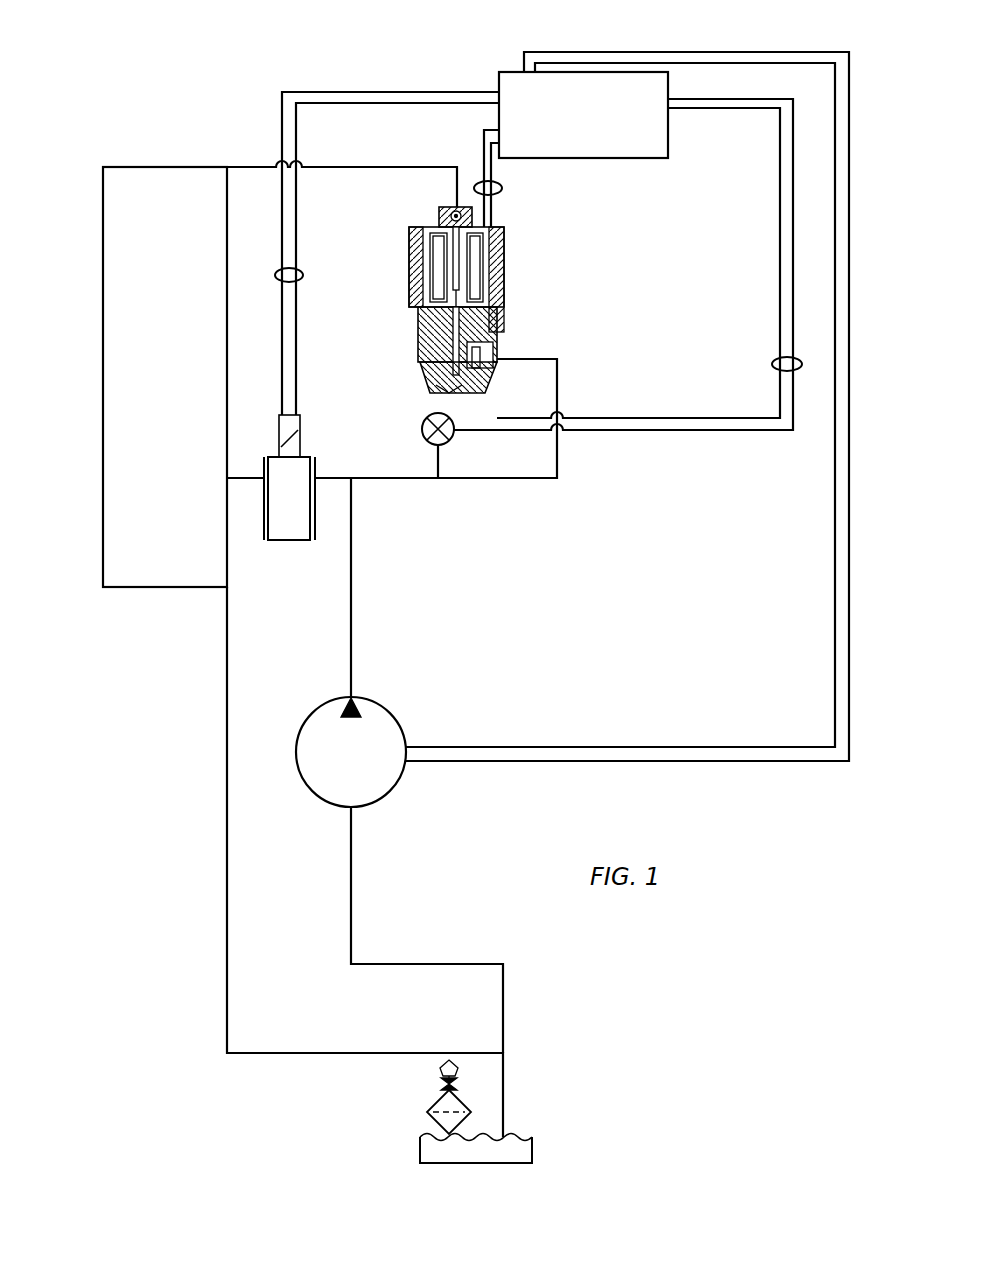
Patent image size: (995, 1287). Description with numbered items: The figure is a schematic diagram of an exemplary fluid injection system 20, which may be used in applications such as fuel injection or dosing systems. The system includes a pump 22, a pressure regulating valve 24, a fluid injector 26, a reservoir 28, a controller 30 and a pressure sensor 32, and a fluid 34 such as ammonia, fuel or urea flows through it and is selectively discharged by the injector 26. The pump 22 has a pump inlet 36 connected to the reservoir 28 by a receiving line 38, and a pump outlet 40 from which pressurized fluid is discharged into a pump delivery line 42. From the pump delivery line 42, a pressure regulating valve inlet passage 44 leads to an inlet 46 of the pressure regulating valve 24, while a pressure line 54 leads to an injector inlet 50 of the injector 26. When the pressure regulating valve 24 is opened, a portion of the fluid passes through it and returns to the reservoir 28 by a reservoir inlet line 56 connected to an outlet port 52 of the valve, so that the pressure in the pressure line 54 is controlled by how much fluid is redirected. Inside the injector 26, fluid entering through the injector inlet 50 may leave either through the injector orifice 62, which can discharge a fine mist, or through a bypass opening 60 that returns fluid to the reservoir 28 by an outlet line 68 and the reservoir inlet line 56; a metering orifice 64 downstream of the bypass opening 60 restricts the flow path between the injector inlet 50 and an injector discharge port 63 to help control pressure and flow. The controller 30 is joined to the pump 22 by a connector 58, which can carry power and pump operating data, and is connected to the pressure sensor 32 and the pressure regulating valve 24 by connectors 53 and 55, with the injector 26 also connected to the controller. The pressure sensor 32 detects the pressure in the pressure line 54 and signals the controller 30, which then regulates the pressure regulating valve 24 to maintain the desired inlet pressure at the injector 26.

The fluid injection system 20 is at (480, 640).
The pump 22 is at (407, 762).
The pressure regulating valve 24 is at (292, 542).
The fluid injector 26 is at (505, 280).
The reservoir 28 is at (402, 1112).
The controller 30 is at (668, 150).
The pressure sensor 32 is at (427, 418).
The fluid 34 is at (520, 1137).
The pump inlet 36 is at (353, 808).
The receiving line 38 is at (353, 930).
The pump outlet 40 is at (353, 698).
The pump delivery line 42 is at (353, 600).
The pressure regulating valve inlet passage 44 is at (333, 480).
The inlet 46 is at (318, 470).
The injector inlet 50 is at (500, 355).
The outlet port 52 is at (262, 478).
The connector 53 is at (772, 364).
The pressure line 54 is at (558, 380).
The connector 55 is at (303, 276).
The reservoir inlet line 56 is at (226, 733).
The connector 58 is at (724, 747).
The bypass opening 60 is at (447, 270).
The injector orifice 62 is at (460, 390).
The injector discharge port 63 is at (452, 212).
The metering orifice 64 is at (440, 212).
The outlet line 68 is at (105, 263).